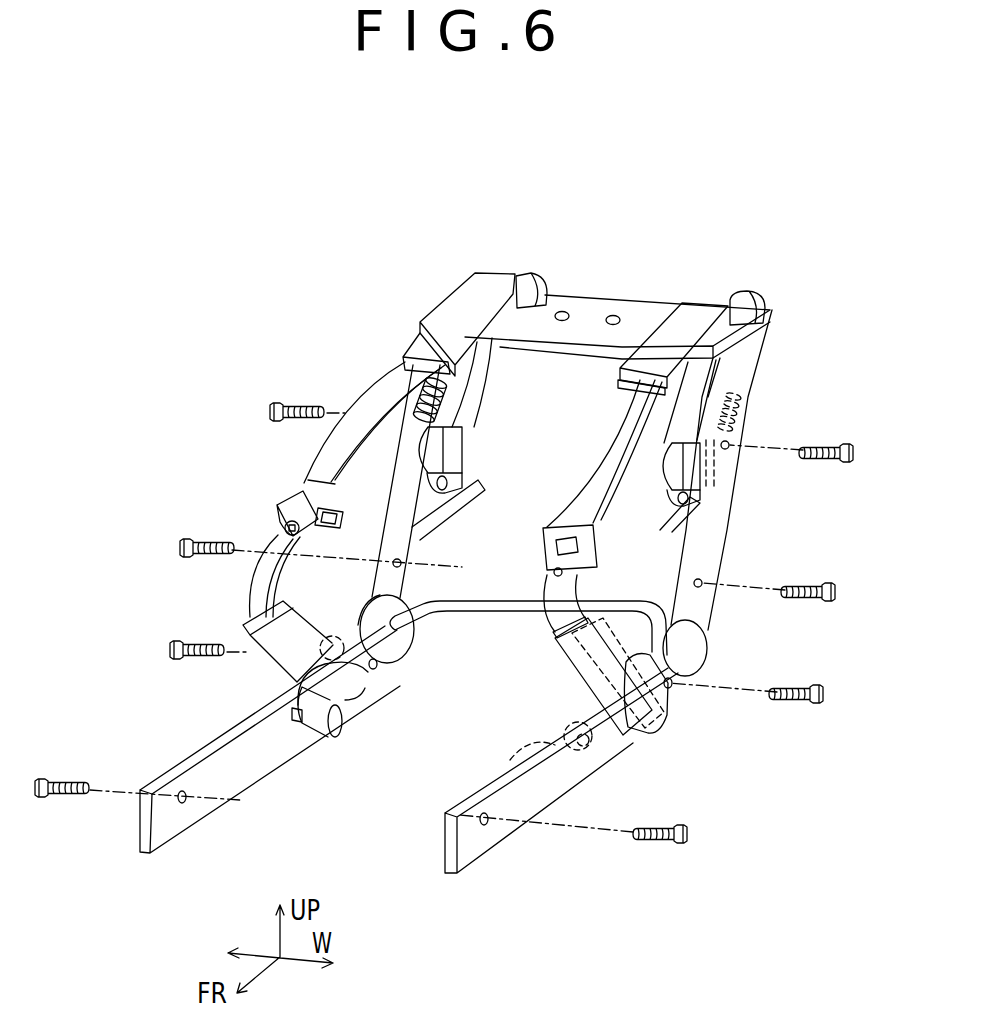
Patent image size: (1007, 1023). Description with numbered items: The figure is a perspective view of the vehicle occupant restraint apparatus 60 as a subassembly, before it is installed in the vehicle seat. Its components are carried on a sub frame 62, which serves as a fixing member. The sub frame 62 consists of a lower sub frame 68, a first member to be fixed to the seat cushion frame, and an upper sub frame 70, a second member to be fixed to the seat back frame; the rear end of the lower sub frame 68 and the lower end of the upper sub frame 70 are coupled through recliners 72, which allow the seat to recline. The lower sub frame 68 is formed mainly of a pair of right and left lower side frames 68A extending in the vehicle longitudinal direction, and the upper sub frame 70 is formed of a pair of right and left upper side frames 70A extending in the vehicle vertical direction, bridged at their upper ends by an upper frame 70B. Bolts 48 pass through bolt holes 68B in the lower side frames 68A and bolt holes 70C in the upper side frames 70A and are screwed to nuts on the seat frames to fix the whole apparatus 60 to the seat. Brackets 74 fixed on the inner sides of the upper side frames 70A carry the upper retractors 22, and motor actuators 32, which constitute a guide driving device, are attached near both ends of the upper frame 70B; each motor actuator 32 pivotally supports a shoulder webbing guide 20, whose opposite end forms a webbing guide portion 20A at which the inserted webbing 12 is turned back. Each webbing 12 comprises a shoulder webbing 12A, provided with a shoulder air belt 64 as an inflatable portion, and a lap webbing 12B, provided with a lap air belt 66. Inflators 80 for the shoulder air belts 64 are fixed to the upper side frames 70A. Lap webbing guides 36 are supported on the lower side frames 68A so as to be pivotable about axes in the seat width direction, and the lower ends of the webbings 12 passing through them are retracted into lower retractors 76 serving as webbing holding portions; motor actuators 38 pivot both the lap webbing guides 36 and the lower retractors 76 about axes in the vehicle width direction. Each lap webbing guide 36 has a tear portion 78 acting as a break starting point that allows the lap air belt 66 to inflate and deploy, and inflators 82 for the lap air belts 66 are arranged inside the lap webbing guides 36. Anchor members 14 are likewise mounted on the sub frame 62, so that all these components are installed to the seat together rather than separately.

The vehicle occupant restraint apparatus 60 is at (662, 263).
The sub frame 62 is at (847, 613).
The upper sub frame 70 is at (726, 623).
The upper side frames 70A is at (437, 545).
The upper frame 70B is at (597, 313).
The bolt holes 70C is at (360, 416).
The motor actuator 32 is at (512, 282).
The shoulder webbing guide 20 is at (457, 317).
The webbing guide portion 20A is at (425, 345).
The lower sub frame 68 is at (623, 770).
The lower side frames 68A is at (253, 765).
The bolt holes 68B is at (183, 813).
The recliners 72 is at (413, 650).
The brackets 74 is at (460, 503).
The webbing 12 is at (458, 410).
The shoulder webbing 12A is at (444, 402).
The lap webbing 12B is at (341, 623).
The shoulder air belt 64 is at (363, 413).
The lap air belt 66 is at (257, 567).
The upper retractor 22 is at (487, 430).
The anchor member 14 is at (673, 517).
The inflator 80 is at (453, 388).
The tear portion 78 is at (600, 637).
The lap webbing guide 36 is at (287, 653).
The motor actuator 38 is at (300, 717).
The lower retractor 76 is at (347, 727).
The inflator 82 is at (343, 627).
The bolts 48 is at (270, 410).